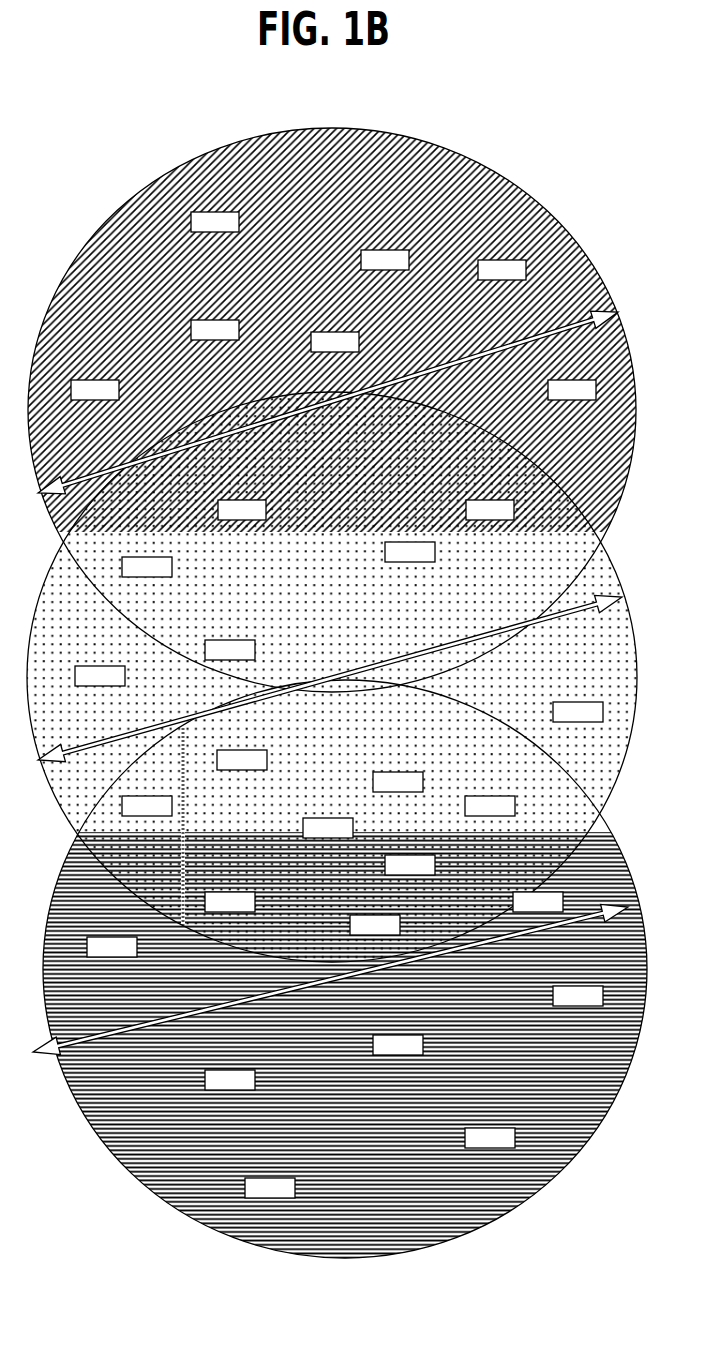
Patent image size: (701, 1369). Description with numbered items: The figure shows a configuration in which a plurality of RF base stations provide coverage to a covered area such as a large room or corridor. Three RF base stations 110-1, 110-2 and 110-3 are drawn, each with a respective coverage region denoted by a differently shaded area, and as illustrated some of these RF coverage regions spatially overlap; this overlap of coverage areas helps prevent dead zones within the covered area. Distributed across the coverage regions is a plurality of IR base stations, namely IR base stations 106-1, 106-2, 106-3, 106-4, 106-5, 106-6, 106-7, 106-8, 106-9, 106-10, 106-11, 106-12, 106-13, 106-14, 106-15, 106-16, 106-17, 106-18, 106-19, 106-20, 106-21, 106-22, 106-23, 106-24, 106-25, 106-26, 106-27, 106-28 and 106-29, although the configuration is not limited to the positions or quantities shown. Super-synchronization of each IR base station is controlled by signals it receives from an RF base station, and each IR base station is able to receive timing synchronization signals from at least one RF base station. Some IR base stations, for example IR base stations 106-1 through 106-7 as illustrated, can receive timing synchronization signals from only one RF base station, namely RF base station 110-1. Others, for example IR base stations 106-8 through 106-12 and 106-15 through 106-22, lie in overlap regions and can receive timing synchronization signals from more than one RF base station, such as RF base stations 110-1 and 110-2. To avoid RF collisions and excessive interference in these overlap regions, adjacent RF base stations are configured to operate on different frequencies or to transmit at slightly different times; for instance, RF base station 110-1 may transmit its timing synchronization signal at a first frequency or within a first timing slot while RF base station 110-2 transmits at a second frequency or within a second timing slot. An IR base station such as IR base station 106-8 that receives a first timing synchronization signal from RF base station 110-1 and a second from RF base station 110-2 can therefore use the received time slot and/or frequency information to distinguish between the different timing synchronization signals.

The IR base station 106-1 is at (215, 222).
The IR base station 106-2 is at (385, 260).
The IR base station 106-3 is at (502, 270).
The IR base station 106-4 is at (95, 390).
The IR base station 106-5 is at (215, 330).
The IR base station 106-6 is at (335, 342).
The IR base station 106-7 is at (572, 390).
The IR base station 106-8 is at (242, 510).
The IR base station 106-9 is at (490, 510).
The IR base station 106-10 is at (147, 567).
The IR base station 106-11 is at (410, 552).
The IR base station 106-12 is at (230, 650).
The IR base station 106-13 is at (100, 676).
The IR base station 106-14 is at (578, 712).
The IR base station 106-15 is at (242, 760).
The IR base station 106-16 is at (398, 782).
The IR base station 106-17 is at (147, 806).
The IR base station 106-18 is at (490, 806).
The IR base station 106-19 is at (328, 828).
The IR base station 106-20 is at (410, 865).
The IR base station 106-21 is at (230, 902).
The IR base station 106-22 is at (375, 925).
The IR base station 106-23 is at (538, 902).
The IR base station 106-24 is at (112, 947).
The IR base station 106-25 is at (578, 996).
The IR base station 106-26 is at (398, 1045).
The IR base station 106-27 is at (230, 1080).
The IR base station 106-28 is at (490, 1138).
The IR base station 106-29 is at (270, 1188).
The RF base station 110-1 is at (328, 402).
The RF base station 110-2 is at (329, 679).
The RF base station 110-3 is at (330, 980).